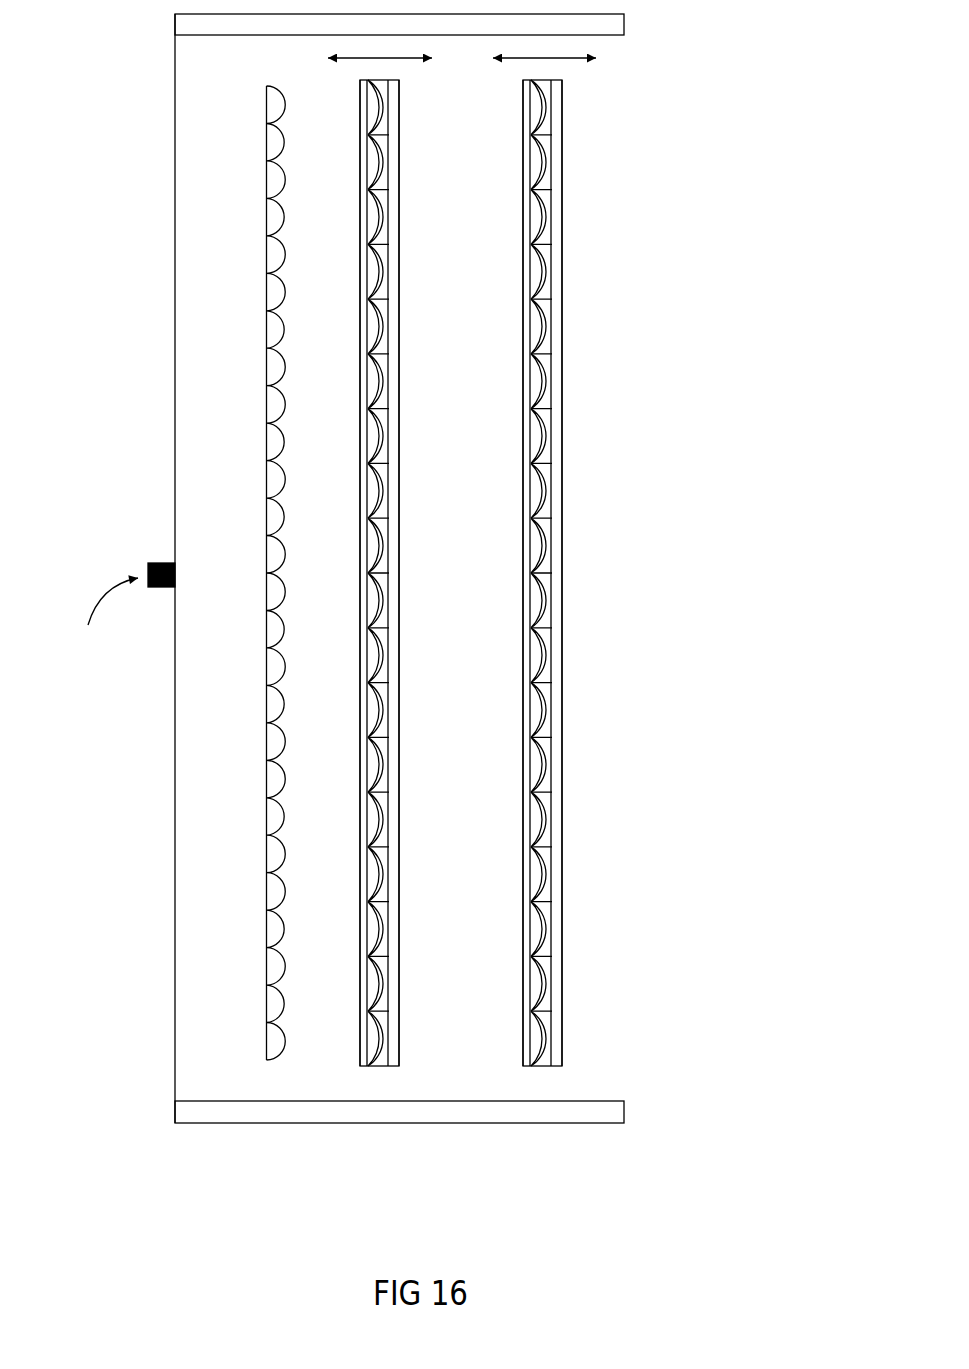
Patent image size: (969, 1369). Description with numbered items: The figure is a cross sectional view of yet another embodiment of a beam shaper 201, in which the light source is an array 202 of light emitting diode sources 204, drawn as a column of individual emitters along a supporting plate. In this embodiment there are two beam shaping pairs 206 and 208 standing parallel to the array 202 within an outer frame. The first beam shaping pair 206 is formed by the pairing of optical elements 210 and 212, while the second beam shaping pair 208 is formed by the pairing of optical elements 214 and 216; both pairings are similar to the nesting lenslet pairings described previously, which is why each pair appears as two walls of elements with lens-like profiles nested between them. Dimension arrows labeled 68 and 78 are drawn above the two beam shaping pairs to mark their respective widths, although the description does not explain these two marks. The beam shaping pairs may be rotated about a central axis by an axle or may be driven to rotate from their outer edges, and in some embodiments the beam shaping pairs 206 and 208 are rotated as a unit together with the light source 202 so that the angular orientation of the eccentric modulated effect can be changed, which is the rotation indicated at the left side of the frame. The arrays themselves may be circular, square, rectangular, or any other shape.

The beam shaper 201 is at (170, 923).
The array of light emitting diode sources 202 is at (263, 1070).
The light emitting diode source 204 is at (270, 703).
The first beam shaping pair 206 is at (380, 640).
The second beam shaping pair 208 is at (545, 640).
The optical element 210 is at (362, 1070).
The optical element 212 is at (398, 1070).
The optical element 214 is at (526, 1070).
The optical element 216 is at (560, 1070).
The width of first lens array 68 is at (380, 49).
The width of second lens array 78 is at (544, 49).